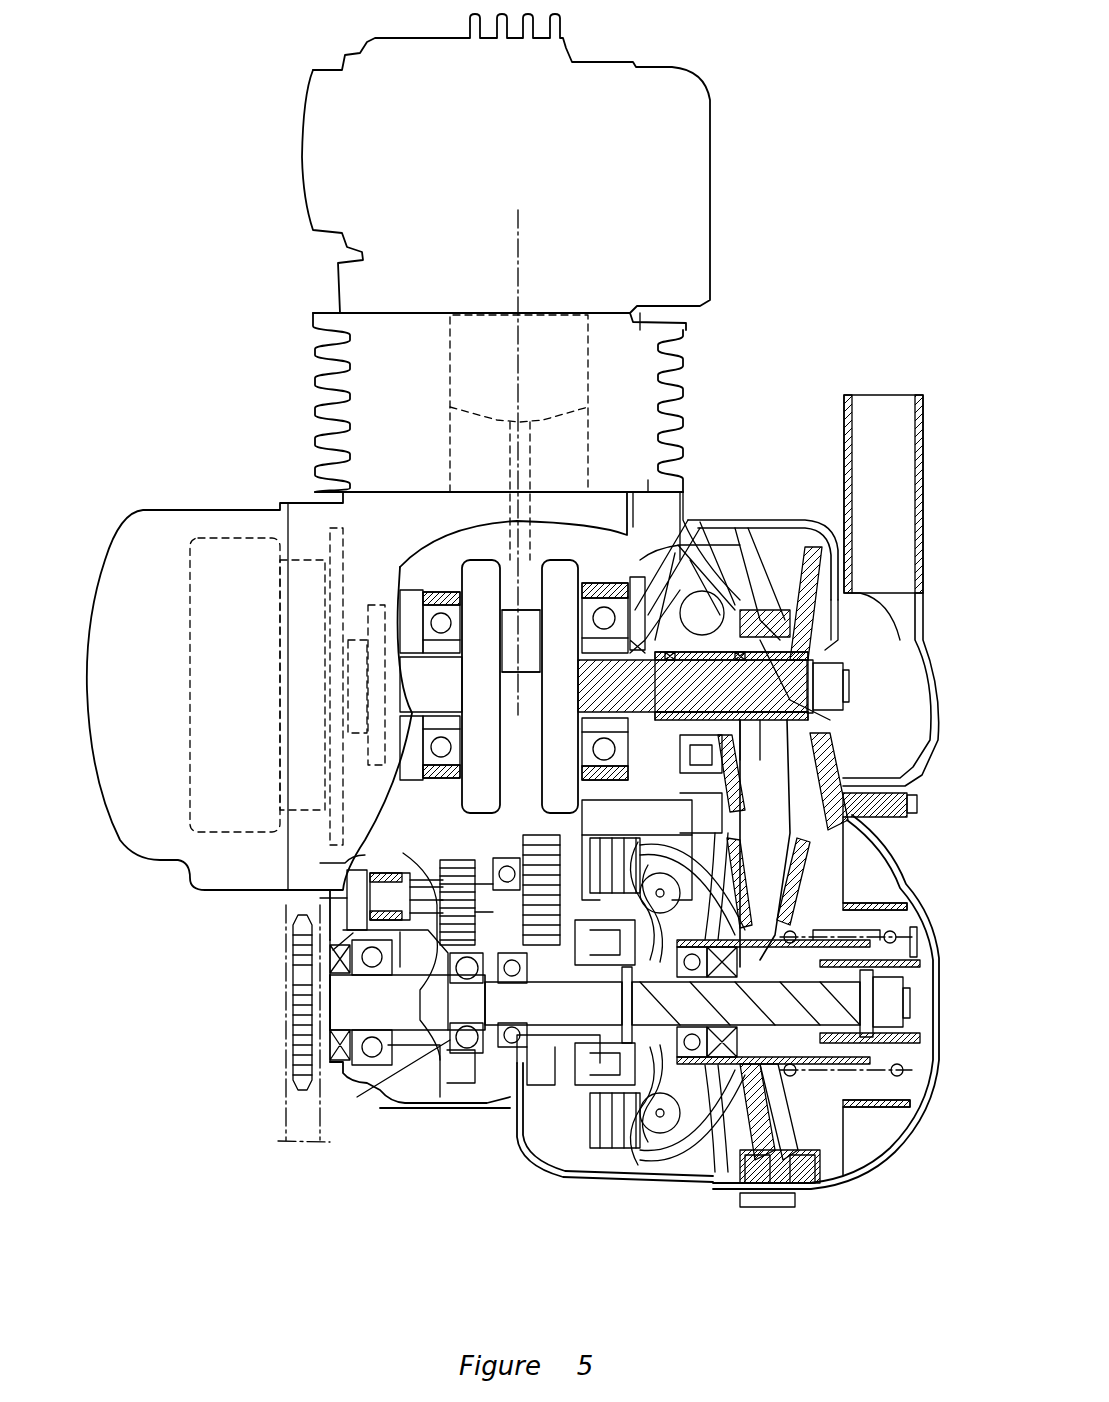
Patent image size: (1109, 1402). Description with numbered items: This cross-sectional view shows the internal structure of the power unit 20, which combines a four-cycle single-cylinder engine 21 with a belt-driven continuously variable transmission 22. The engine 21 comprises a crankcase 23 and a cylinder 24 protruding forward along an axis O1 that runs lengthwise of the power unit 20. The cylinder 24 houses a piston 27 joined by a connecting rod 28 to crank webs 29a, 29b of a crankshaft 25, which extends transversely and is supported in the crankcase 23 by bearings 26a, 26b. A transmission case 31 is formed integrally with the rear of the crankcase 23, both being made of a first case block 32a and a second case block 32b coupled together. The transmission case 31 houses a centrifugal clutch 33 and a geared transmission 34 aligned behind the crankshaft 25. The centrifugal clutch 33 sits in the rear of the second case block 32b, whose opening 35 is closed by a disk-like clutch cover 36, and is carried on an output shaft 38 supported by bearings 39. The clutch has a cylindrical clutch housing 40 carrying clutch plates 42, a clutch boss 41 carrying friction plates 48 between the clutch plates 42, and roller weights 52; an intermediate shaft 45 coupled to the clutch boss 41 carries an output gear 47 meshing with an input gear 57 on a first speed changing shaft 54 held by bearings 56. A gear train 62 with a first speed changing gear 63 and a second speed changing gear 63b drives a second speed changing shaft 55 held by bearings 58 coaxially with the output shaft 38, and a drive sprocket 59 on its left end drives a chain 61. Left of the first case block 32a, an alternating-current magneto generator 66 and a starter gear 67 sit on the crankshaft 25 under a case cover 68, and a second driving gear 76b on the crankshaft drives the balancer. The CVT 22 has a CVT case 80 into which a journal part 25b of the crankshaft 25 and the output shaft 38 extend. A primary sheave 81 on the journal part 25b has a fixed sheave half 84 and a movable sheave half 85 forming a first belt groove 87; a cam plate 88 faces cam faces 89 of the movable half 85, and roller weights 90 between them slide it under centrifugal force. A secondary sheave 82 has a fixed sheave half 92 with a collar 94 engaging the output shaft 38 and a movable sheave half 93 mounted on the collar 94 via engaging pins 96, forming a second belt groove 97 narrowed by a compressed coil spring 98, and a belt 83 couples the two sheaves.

The power unit 20 is at (822, 252).
The engine 21 is at (320, 440).
The continuously variable transmission 22 is at (905, 690).
The crankcase 23 is at (648, 480).
The cylinder 24 is at (656, 340).
The crankshaft 25 is at (410, 735).
The journal part 25b is at (800, 706).
The bearing 26a is at (440, 610).
The bearing 26b is at (605, 600).
The piston 27 is at (470, 313).
The connecting rod 28 is at (512, 540).
The crank web 29a is at (480, 563).
The crank web 29b is at (548, 563).
The transmission case 31 is at (512, 1165).
The first case block 32a is at (370, 1095).
The second case block 32b is at (540, 1180).
The centrifugal clutch 33 is at (680, 1150).
The geared transmission 34 is at (330, 930).
The opening 35 is at (700, 800).
The clutch cover 36 is at (735, 870).
The output shaft 38 is at (830, 1045).
The bearings 39 is at (720, 900).
The clutch housing 40 is at (652, 1122).
The clutch boss 41 is at (690, 983).
The clutch plates 42 is at (592, 825).
The intermediate shaft 45 is at (560, 1042).
The output gear 47 is at (546, 1062).
The friction plates 48 is at (640, 1150).
The roller weights 52 is at (690, 830).
The first speed changing shaft 54 is at (395, 852).
The second speed changing shaft 55 is at (330, 1005).
The bearings 56 is at (520, 840).
The input gear 57 is at (558, 1005).
The bearings 58 is at (373, 1050).
The drive sprocket 59 is at (300, 1045).
The chain 61 is at (300, 1110).
The gear train 62 is at (365, 891).
The first speed changing gear 63 is at (460, 862).
The second speed changing gear 63b is at (460, 1047).
The alternating-current magneto generator 66 is at (205, 678).
The starter gear 67 is at (340, 758).
The case cover 68 is at (142, 522).
The second driving gear 76b is at (345, 630).
The CVT case 80 is at (912, 770).
The primary sheave 81 is at (752, 440).
The secondary sheave 82 is at (768, 1262).
The belt 83 is at (790, 645).
The fixed sheave half 84 is at (810, 545).
The movable sheave half 85 is at (735, 592).
The first belt groove 87 is at (770, 595).
The cam plate 88 is at (692, 600).
The cam faces 89 is at (717, 592).
The roller weights 90 is at (672, 562).
The fixed sheave half 92 is at (760, 1175).
The movable sheave half 93 is at (830, 1130).
The collar 94 is at (880, 1043).
The engaging pins 96 is at (840, 925).
The second belt groove 97 is at (785, 1130).
The compressed coil spring 98 is at (790, 932).
The axis O1 is at (522, 238).